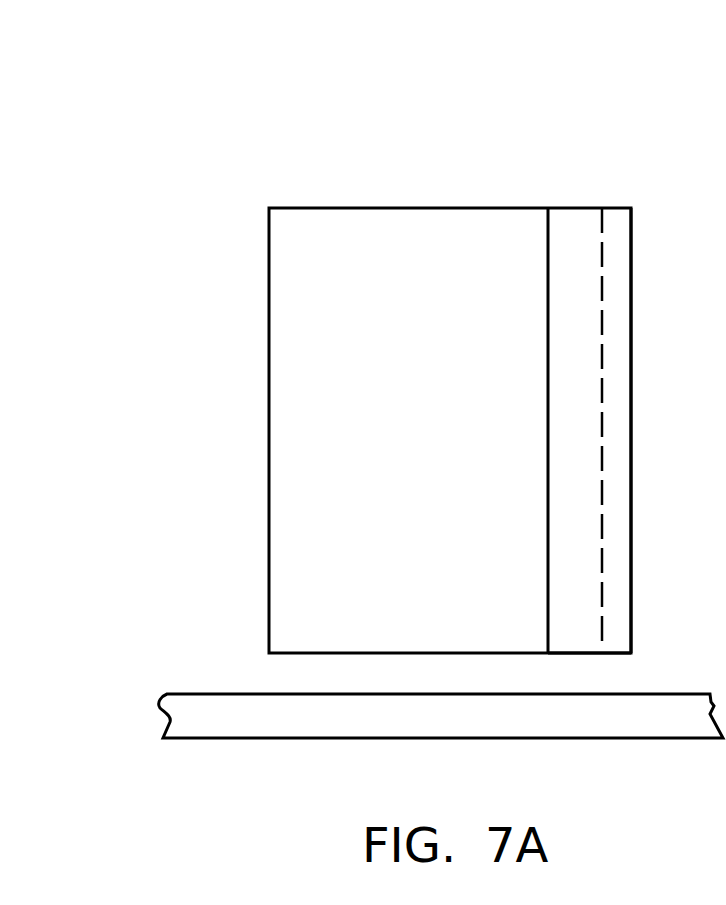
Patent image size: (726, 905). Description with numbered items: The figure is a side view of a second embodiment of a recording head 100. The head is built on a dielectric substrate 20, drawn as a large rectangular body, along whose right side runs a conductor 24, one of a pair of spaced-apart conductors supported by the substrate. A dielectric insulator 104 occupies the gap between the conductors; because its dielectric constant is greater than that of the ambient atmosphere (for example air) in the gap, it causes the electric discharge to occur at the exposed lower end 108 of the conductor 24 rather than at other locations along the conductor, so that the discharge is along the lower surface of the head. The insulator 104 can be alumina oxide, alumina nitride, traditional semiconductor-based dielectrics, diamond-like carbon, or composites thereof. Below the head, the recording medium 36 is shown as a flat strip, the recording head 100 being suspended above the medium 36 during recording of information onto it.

The recording head 100 is at (459, 150).
The dielectric substrate 20 is at (269, 438).
The conductor 24 is at (582, 213).
The dielectric insulator 104 is at (632, 429).
The lower end of conductor 108 is at (590, 655).
The recording medium 36 is at (583, 731).